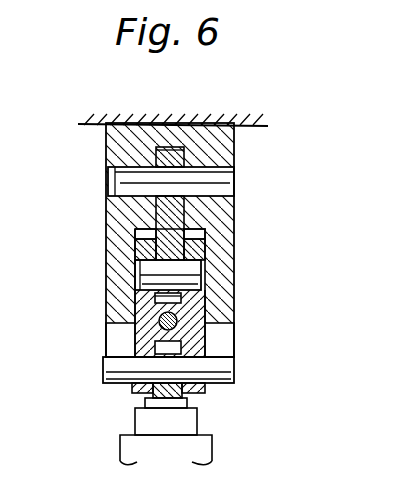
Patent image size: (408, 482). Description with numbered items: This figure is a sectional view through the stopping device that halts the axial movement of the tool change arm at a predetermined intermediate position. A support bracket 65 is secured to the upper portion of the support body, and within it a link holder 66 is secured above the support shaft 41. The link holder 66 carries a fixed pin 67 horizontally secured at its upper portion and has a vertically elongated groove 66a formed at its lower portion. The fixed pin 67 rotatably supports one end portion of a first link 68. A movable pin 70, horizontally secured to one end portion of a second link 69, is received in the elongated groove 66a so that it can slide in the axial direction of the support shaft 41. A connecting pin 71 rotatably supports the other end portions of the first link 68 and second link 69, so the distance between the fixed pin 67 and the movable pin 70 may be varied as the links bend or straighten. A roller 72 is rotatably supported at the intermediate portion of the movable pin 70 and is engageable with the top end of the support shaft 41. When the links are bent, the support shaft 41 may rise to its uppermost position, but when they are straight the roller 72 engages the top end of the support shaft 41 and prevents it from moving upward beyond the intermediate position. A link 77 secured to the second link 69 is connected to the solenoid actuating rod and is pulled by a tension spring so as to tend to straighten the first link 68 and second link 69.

The support bracket 65 is at (243, 125).
The link holder 66 is at (115, 222).
The vertically elongated groove 66a is at (218, 345).
The fixed pin 67 is at (113, 173).
The first link 68 is at (175, 217).
The second link 69 is at (205, 306).
The movable pin 70 is at (115, 368).
The connecting pin 71 is at (195, 271).
The roller 72 is at (170, 400).
The link 77 is at (159, 319).
The support shaft 41 is at (132, 448).